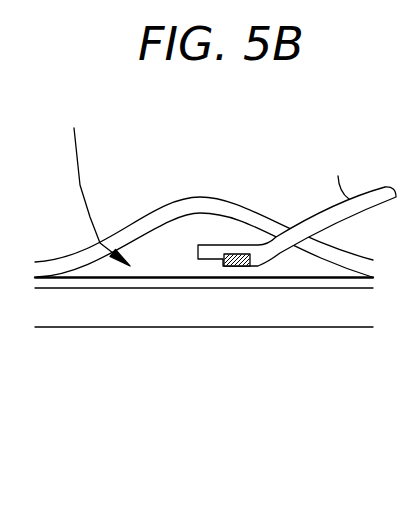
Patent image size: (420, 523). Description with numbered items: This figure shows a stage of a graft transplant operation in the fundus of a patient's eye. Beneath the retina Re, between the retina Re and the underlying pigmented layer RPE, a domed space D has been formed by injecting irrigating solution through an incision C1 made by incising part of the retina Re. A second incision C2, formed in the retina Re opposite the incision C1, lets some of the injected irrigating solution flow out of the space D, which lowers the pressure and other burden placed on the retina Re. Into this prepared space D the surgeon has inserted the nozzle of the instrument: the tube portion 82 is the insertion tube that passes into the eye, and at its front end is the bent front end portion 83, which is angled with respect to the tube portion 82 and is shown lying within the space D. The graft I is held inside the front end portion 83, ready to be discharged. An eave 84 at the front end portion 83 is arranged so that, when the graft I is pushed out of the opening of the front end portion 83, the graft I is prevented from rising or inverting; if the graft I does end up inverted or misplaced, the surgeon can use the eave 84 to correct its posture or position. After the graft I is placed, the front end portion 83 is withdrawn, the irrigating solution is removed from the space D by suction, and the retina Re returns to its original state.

The retina Re is at (68, 256).
The pigmented layer RPE is at (115, 283).
The tube portion 82 is at (324, 211).
The front end portion 83 is at (263, 244).
The eave 84 is at (215, 246).
The graft I is at (234, 267).
The space D is at (99, 184).
The incision C1 is at (308, 240).
The incision C2 is at (115, 238).